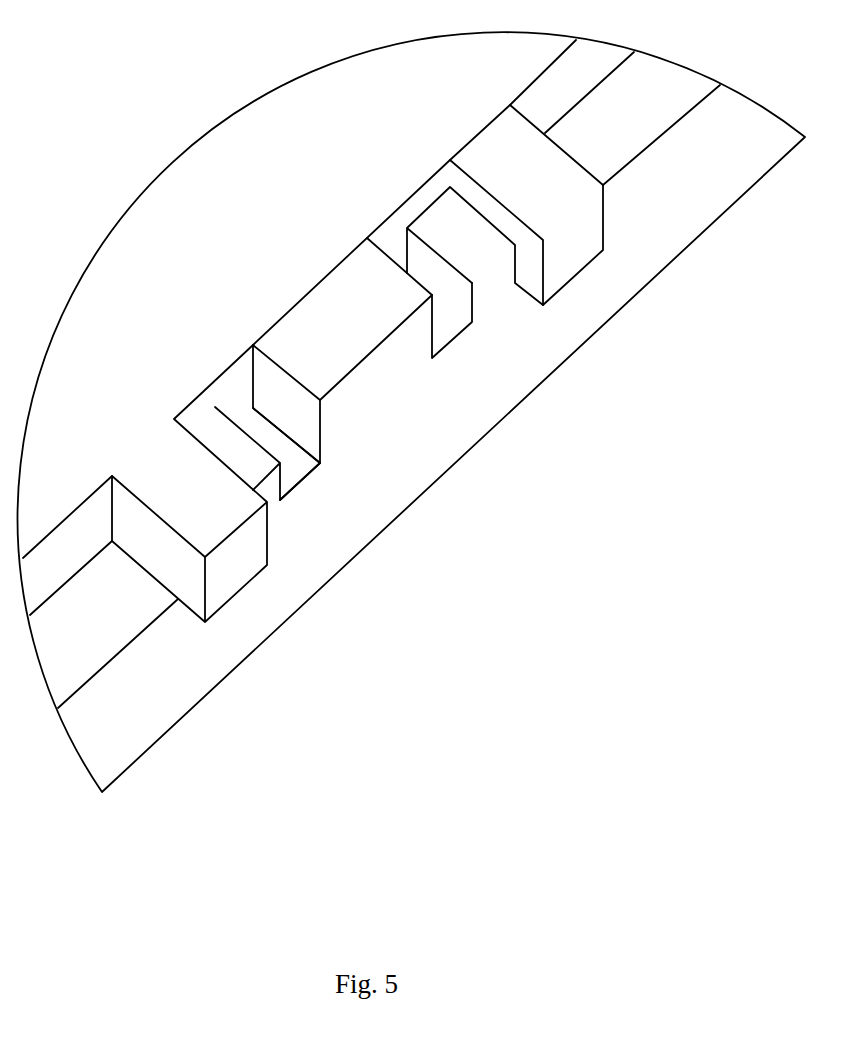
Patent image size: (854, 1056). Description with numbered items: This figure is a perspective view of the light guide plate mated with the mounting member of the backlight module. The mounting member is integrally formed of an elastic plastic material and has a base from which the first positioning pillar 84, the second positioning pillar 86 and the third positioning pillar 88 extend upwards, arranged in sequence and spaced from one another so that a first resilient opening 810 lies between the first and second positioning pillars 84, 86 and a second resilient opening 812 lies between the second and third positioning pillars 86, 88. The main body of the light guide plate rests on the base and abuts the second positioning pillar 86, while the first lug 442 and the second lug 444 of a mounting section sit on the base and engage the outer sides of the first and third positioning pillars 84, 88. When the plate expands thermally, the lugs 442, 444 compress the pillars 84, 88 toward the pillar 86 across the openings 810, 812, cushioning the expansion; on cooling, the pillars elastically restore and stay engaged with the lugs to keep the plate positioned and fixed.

The first positioning pillar 84 is at (232, 443).
The second positioning pillar 86 is at (345, 325).
The third positioning pillar 88 is at (467, 243).
The first lug 442 is at (195, 507).
The second lug 444 is at (540, 193).
The first resilient opening 810 is at (292, 455).
The second resilient opening 812 is at (443, 313).